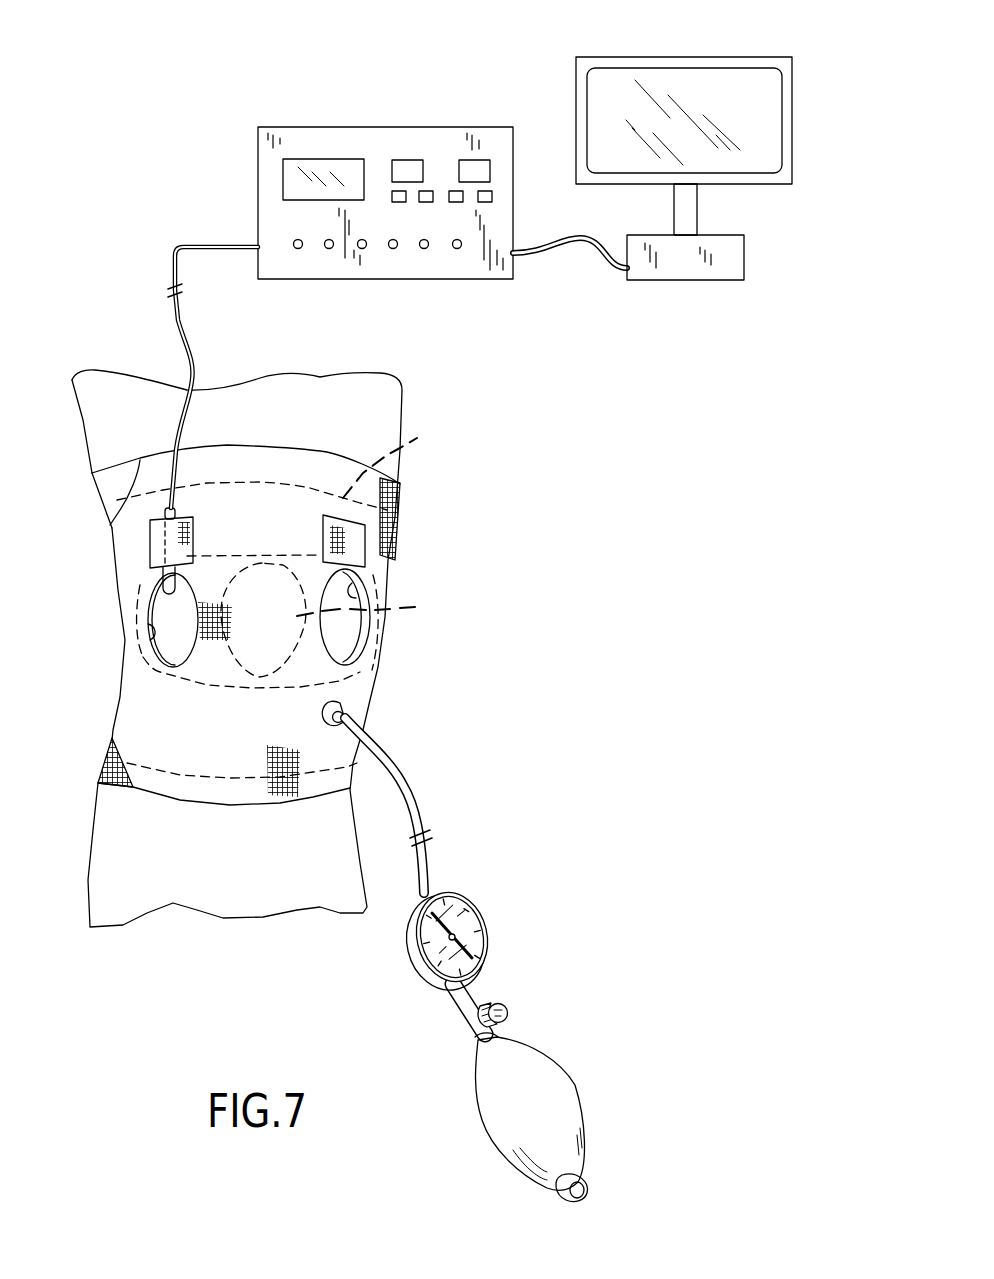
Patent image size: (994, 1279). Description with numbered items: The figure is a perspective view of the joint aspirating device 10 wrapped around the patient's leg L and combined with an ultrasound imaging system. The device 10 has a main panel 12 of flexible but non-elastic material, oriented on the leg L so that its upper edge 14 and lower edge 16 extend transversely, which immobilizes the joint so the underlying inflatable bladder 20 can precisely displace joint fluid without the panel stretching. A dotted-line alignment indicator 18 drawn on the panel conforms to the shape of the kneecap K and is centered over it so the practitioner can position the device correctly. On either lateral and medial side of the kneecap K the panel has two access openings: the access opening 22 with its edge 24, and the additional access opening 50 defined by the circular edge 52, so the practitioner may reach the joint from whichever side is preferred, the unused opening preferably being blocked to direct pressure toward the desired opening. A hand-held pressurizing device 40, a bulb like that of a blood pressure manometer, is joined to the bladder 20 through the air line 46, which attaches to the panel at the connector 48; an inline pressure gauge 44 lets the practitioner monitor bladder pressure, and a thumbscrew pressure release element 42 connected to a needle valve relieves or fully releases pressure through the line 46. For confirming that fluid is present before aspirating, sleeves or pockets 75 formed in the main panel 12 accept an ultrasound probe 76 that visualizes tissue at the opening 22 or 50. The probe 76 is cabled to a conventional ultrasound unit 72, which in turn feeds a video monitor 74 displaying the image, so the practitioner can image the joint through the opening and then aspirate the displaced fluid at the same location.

The aspirating device 10 is at (437, 503).
The main panel 12 is at (117, 498).
The upper edge 14 is at (242, 448).
The lower edge 16 is at (247, 805).
The alignment indicator 18 is at (263, 560).
The bladder 20 is at (422, 428).
The access opening 22 is at (157, 607).
The edge of left opening 24 is at (157, 633).
The pressurizing device 40 is at (553, 1088).
The pressure release element 42 is at (505, 1010).
The pressure gauge 44 is at (480, 918).
The air line 46 is at (445, 806).
The connector port 48 is at (332, 703).
The additional access opening 50 is at (357, 627).
The circular edge 52 is at (352, 594).
The ultrasound unit 72 is at (370, 127).
The video monitor 74 is at (720, 57).
The sleeves 75 is at (190, 538).
The ultrasound probe 76 is at (170, 587).
The kneecap K is at (367, 609).
The leg L is at (335, 392).